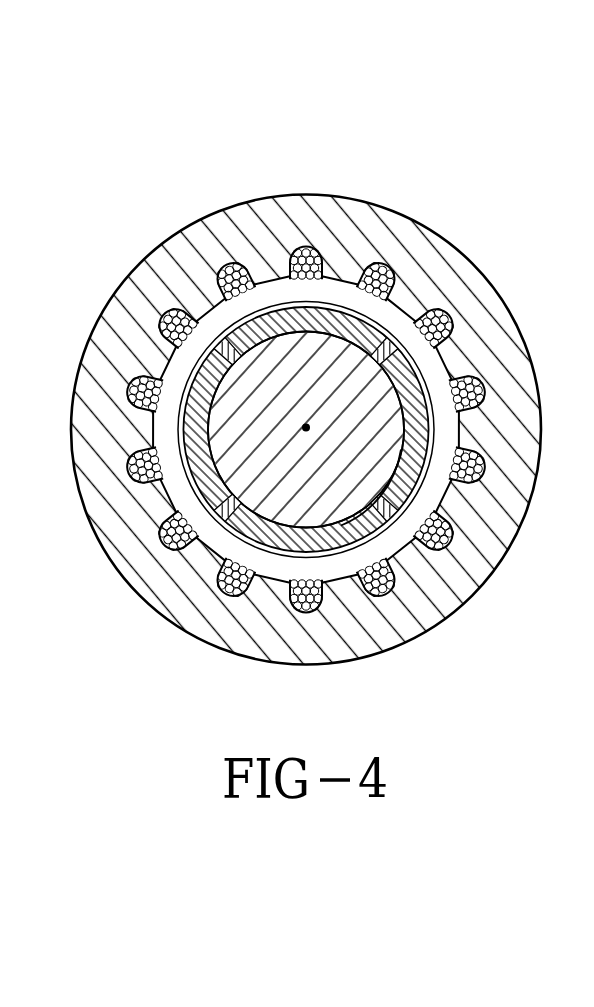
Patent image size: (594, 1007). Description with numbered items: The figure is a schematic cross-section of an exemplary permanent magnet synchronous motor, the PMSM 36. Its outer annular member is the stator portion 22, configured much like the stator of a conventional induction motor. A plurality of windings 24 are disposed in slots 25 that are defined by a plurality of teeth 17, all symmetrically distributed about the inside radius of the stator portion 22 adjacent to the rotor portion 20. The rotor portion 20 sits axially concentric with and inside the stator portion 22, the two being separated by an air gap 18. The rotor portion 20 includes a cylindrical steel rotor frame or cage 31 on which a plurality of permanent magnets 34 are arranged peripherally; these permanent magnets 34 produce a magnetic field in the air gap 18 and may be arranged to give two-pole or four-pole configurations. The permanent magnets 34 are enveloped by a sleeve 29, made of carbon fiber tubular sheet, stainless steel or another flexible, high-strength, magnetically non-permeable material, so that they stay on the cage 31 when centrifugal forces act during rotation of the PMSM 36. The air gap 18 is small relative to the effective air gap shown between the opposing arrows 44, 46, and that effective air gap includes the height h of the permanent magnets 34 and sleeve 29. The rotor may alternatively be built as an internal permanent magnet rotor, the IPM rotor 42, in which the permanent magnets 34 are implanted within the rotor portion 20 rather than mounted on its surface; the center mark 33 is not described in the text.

The PMSM 36 is at (75, 246).
The teeth 17 is at (301, 253).
The IPM rotor 42 is at (385, 334).
The stator portion 22 is at (463, 258).
The slots 25 is at (139, 378).
The air gap 18 is at (433, 369).
The rotor cage 31 is at (209, 403).
The permanent magnets 34 is at (199, 444).
The shaft axis 33 is at (302, 432).
The arrow 44 is at (391, 468).
The windings 24 is at (219, 542).
The arrow 46 is at (451, 498).
The sleeve 29 is at (231, 548).
The height h is at (267, 522).
The rotor portion 20 is at (325, 546).